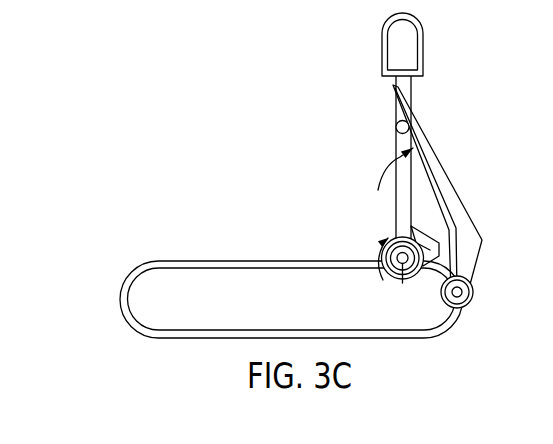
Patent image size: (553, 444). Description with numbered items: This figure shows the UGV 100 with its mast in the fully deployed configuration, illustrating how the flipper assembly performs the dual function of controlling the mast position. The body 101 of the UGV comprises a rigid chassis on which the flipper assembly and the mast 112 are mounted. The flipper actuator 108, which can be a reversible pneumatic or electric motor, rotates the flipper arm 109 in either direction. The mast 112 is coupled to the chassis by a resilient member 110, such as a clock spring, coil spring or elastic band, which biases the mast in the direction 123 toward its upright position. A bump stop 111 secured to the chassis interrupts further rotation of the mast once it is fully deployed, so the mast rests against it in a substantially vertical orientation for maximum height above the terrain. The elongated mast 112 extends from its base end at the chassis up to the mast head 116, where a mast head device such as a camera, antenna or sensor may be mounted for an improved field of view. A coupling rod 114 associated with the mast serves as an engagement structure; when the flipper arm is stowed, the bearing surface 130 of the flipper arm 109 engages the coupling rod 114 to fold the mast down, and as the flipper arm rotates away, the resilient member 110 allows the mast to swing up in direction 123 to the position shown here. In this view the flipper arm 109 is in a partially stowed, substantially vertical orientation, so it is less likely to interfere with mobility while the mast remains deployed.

The UGV 100 is at (237, 147).
The body 101 is at (245, 253).
The flipper actuator 108 is at (475, 292).
The flipper arm 109 is at (454, 182).
The resilient member 110 is at (372, 248).
The bump stop 111 is at (433, 238).
The mast 112 is at (397, 208).
The coupling rod 114 is at (395, 126).
The mast head 116 is at (382, 50).
The direction 123 is at (385, 274).
The bearing surface 130 is at (387, 179).